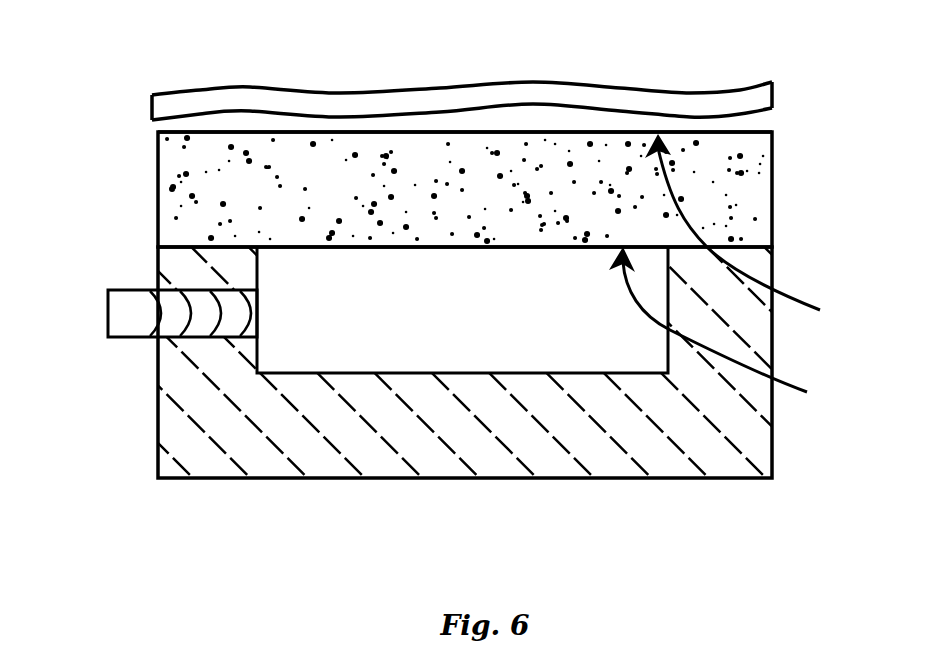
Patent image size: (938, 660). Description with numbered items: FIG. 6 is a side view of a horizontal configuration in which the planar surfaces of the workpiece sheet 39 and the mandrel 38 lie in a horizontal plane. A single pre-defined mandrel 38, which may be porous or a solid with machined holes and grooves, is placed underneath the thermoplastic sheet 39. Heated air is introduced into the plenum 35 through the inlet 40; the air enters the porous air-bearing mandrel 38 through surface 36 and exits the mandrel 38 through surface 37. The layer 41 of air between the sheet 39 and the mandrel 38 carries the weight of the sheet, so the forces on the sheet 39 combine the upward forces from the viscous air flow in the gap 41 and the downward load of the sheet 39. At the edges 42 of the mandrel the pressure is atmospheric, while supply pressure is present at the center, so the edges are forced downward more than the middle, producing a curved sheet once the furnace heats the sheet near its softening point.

The plenum 35 is at (585, 338).
The entry surface of mandrel 36 is at (551, 325).
The exit surface of mandrel 37 is at (748, 230).
The mandrel 38 is at (732, 183).
The workpiece sheet 39 is at (750, 85).
The inlet 40 is at (107, 317).
The layer of air 41 is at (452, 122).
The edges of mandrel 42 is at (787, 126).